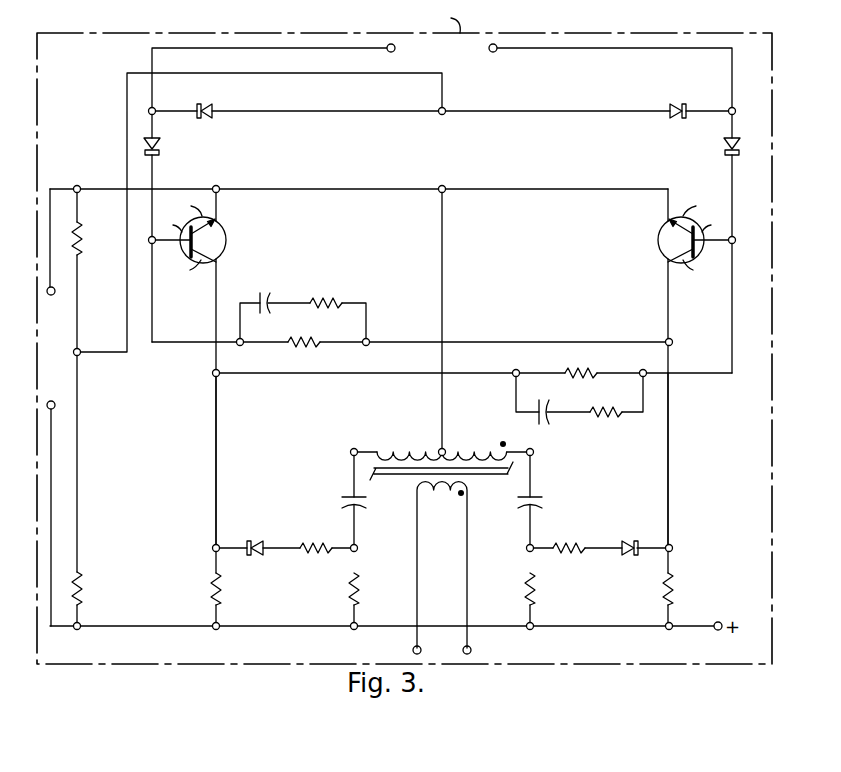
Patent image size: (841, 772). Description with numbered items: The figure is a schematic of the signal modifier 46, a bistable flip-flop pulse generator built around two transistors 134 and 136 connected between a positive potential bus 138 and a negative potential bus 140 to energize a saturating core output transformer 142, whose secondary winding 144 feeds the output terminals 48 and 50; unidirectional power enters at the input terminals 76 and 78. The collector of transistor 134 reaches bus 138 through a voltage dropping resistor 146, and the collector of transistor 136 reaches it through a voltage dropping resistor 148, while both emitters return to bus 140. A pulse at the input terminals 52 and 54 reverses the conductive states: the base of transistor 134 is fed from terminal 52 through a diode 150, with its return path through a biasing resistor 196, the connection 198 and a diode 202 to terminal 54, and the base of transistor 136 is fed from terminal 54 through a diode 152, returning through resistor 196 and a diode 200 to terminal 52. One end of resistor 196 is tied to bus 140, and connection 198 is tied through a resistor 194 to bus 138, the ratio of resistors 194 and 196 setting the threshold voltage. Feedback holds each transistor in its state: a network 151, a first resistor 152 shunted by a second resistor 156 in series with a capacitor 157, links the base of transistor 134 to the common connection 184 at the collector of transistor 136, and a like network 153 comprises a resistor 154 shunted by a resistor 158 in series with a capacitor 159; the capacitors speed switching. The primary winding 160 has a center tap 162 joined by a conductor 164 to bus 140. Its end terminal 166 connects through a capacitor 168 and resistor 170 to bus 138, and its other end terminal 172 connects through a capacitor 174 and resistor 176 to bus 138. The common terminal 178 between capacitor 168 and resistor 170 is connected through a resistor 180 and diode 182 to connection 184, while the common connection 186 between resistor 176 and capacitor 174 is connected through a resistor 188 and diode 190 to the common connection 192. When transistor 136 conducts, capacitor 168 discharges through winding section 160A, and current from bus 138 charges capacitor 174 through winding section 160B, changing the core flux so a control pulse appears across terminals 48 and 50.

The signal modifier 46 is at (620, 33).
The output terminal 48 is at (412, 650).
The output terminal 50 is at (472, 651).
The input terminal 52 is at (390, 52).
The input terminal 54 is at (494, 52).
The input terminal 76 is at (49, 295).
The input terminal 78 is at (48, 402).
The transistor 134 is at (227, 237).
The transistor 136 is at (658, 240).
The positive potential bus 138 is at (145, 627).
The negative potential bus 140 is at (398, 189).
The output transformer 142 is at (500, 498).
The secondary winding 144 is at (446, 487).
The voltage dropping resistor 146 is at (207, 580).
The voltage dropping resistor 148 is at (662, 578).
The diode 150 is at (160, 146).
The network 151 is at (348, 334).
The diode / first resistor 152 is at (722, 145).
The network 153 is at (628, 398).
The resistor 154 is at (569, 370).
The second resistor 156 is at (334, 305).
The capacitor 157 is at (268, 294).
The resistor 158 is at (606, 420).
The capacitor 159 is at (551, 393).
The primary winding 160 is at (418, 443).
The winding section 160A is at (480, 442).
The winding section 160B is at (392, 452).
The center tap 162 is at (444, 449).
The conductor 164 is at (443, 272).
The end terminal 166 is at (534, 452).
The capacitor 168 is at (545, 501).
The resistor 170 is at (538, 583).
The end terminal 172 is at (351, 455).
The capacitor 174 is at (340, 503).
The resistor 176 is at (345, 583).
The common terminal 178 is at (527, 548).
The resistor 180 is at (562, 546).
The diode 182 is at (625, 541).
The common connection 184 is at (671, 418).
The common connection 186 is at (358, 548).
The resistor 188 is at (308, 546).
The diode 190 is at (259, 544).
The common connection 192 is at (214, 521).
The resistor 194 is at (87, 585).
The biasing resistor 196 is at (83, 236).
The connection 198 is at (74, 353).
The diode 200 is at (203, 108).
The diode 202 is at (674, 105).